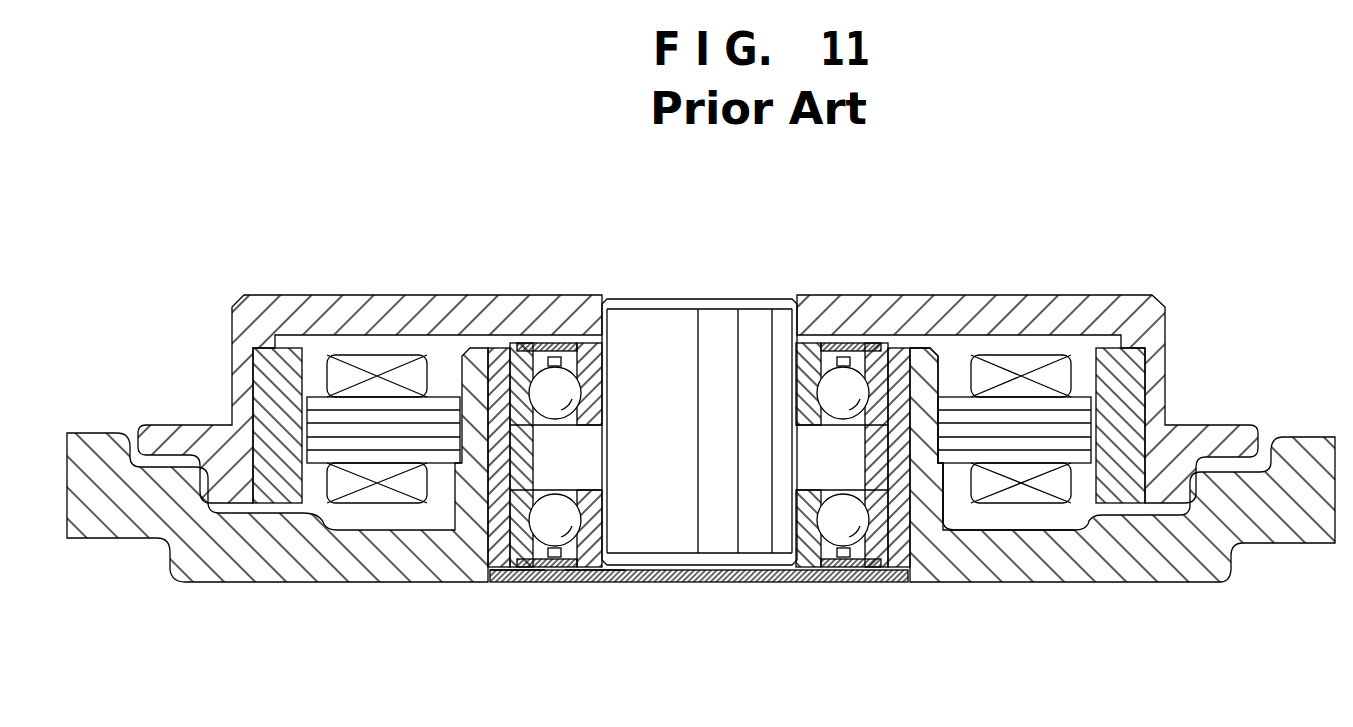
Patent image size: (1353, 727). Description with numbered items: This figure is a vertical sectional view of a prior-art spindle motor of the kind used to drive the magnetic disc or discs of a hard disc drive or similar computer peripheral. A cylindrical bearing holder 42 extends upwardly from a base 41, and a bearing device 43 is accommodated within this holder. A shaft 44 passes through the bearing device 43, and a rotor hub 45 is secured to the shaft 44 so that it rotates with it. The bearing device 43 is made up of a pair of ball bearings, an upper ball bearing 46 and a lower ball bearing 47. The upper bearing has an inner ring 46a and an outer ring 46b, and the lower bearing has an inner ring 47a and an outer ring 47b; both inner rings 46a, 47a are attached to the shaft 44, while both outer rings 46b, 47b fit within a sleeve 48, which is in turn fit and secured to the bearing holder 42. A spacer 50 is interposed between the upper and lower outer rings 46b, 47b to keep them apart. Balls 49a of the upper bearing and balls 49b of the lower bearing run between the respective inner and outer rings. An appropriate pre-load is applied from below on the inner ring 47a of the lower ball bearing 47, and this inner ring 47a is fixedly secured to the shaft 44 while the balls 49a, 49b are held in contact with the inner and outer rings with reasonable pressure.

The base 41 is at (1080, 582).
The bearing holder 42 is at (927, 352).
The bearing device 43 is at (835, 436).
The shaft 44 is at (716, 330).
The rotor hub 45 is at (1062, 307).
The upper ball bearing 46 is at (546, 390).
The inner ring 46a is at (590, 345).
The outer ring 46b is at (510, 352).
The lower ball bearing 47 is at (665, 626).
The inner ring 47a is at (592, 580).
The outer ring 47b is at (512, 578).
The sleeve 48 is at (493, 352).
The balls 49a is at (835, 382).
The balls 49b is at (838, 527).
The spacer 50 is at (928, 530).